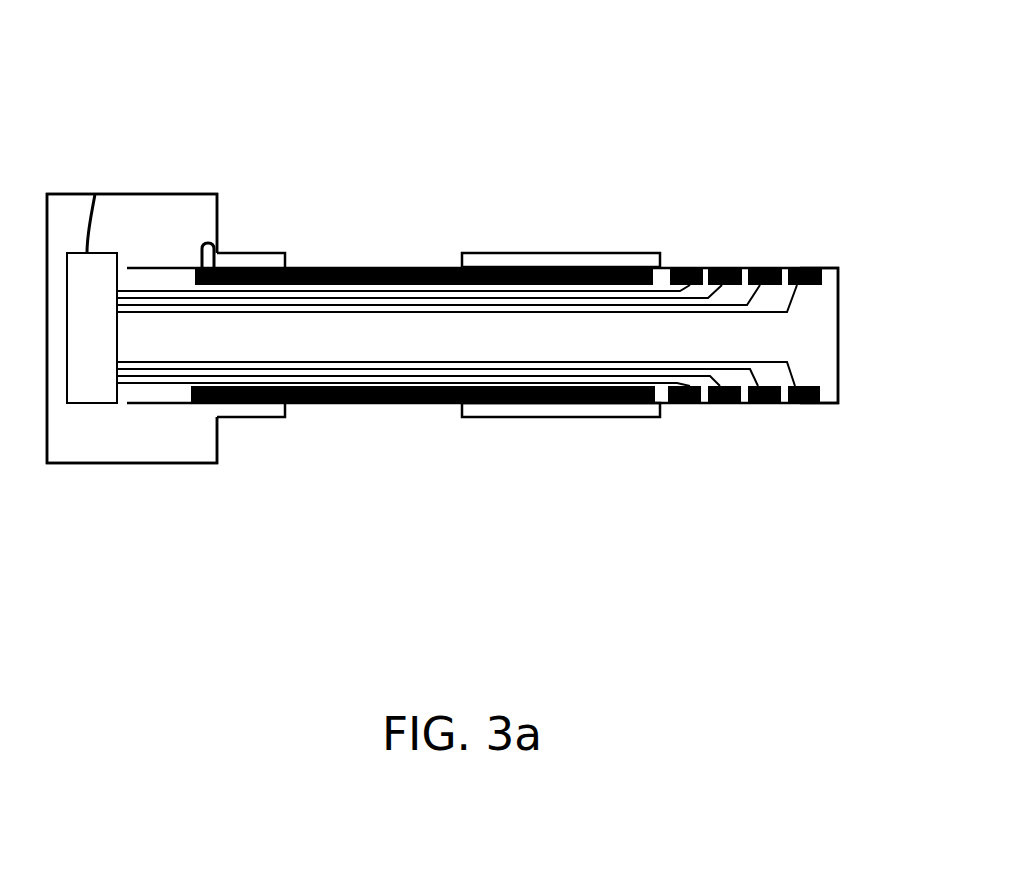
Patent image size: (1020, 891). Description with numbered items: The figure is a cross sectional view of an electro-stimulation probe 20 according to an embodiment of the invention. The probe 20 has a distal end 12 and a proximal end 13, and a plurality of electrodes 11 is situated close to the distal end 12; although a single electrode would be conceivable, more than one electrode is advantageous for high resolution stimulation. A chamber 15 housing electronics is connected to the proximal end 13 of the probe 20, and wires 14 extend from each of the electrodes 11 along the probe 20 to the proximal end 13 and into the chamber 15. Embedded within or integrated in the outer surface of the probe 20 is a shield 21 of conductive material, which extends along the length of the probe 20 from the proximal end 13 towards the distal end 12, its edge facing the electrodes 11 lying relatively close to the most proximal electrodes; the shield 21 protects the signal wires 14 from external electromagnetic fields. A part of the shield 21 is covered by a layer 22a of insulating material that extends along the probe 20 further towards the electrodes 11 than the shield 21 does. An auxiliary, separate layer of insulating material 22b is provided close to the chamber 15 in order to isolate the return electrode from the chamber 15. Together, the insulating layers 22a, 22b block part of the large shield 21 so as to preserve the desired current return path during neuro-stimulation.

The electro-stimulation probe 20 is at (338, 115).
The chamber 15 is at (145, 193).
The proximal end 13 is at (257, 468).
The distal end 12 is at (820, 427).
The auxiliary separate layer of insulating material 22b is at (258, 418).
The layer of insulating material 22a is at (482, 253).
The shield 21 is at (345, 267).
The electrodes 11 is at (695, 268).
The wires 14 is at (790, 362).